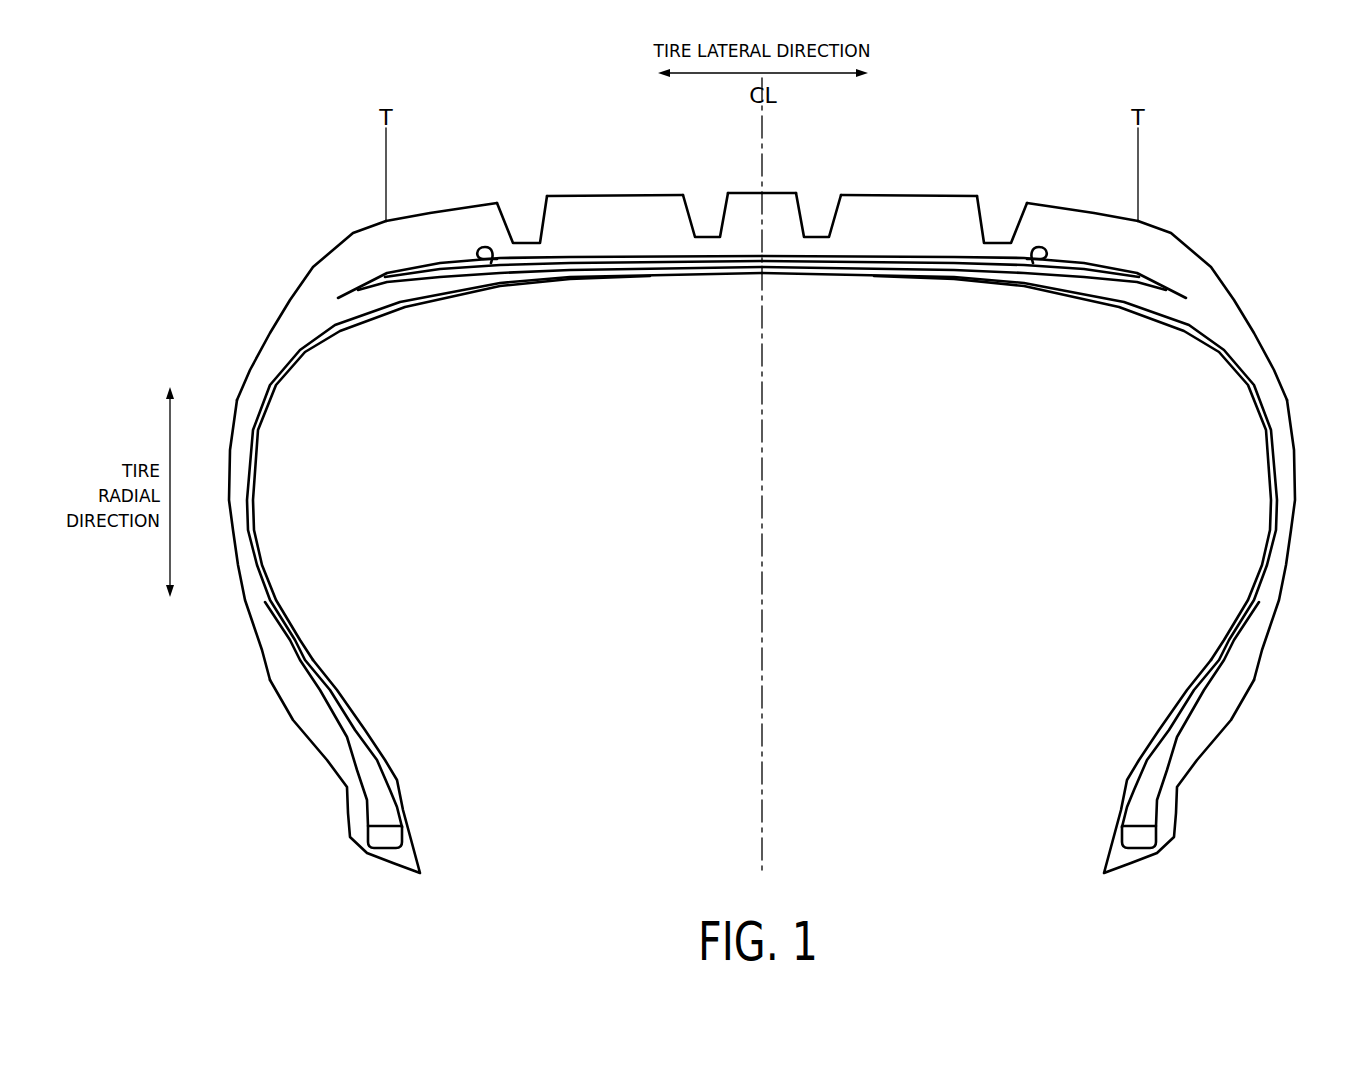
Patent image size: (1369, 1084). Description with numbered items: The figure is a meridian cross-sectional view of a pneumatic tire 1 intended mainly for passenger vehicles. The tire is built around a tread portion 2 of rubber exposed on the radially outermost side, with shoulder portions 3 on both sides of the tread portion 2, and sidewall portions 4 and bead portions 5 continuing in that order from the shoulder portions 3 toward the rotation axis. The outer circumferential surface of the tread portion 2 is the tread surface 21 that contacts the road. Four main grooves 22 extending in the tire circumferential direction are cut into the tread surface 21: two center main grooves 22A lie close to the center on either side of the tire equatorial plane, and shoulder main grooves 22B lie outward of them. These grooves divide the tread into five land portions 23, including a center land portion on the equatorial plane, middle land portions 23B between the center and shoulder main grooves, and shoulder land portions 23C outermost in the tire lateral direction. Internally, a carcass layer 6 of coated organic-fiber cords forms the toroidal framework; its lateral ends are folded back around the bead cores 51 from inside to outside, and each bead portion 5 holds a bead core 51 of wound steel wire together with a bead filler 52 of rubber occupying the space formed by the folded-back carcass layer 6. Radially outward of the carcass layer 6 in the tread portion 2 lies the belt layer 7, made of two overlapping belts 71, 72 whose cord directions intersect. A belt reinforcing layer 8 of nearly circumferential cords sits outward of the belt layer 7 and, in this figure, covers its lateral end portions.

The pneumatic tire 1 is at (1037, 108).
The tread portion 2 is at (622, 197).
The tread surface 21 is at (581, 184).
The main grooves 22 is at (699, 223).
The center main grooves 22A is at (762, 215).
The shoulder main grooves 22B is at (762, 219).
The land portions 23 is at (777, 203).
The middle land portions 23B is at (762, 195).
The shoulder land portions 23C is at (762, 212).
The shoulder portions 3 is at (346, 224).
The sidewall portions 4 is at (222, 428).
The bead portions 5 is at (337, 804).
The bead core 51 is at (392, 836).
The bead filler 52 is at (372, 778).
The carcass layer 6 is at (926, 275).
The belt layer 7 is at (563, 350).
The belt 71 is at (578, 270).
The belt 72 is at (632, 259).
The belt reinforcing layer 8 is at (491, 264).